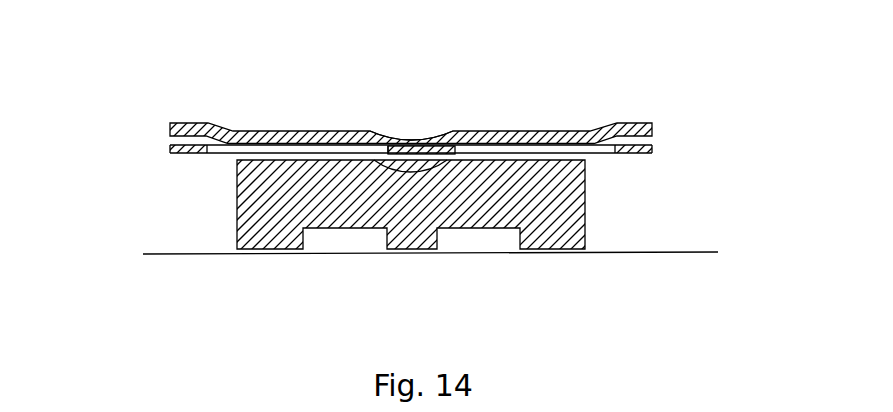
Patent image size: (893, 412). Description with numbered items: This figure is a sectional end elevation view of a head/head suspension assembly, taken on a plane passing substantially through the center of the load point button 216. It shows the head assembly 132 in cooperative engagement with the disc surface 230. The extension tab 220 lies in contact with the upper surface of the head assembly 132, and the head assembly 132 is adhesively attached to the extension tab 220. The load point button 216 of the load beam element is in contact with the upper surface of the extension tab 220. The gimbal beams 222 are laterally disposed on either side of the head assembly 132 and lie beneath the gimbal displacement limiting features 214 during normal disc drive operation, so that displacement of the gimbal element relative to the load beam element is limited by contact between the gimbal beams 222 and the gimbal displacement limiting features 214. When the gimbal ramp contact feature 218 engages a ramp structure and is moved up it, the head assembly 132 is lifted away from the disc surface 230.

The head assembly 132 is at (557, 199).
The gimbal displacement limiting features 214 is at (188, 122).
The load point button 216 is at (408, 143).
The gimbal ramp contact feature 218 is at (447, 146).
The extension tab 220 is at (382, 155).
The gimbal beams 222 is at (170, 149).
The disc surface 230 is at (652, 254).